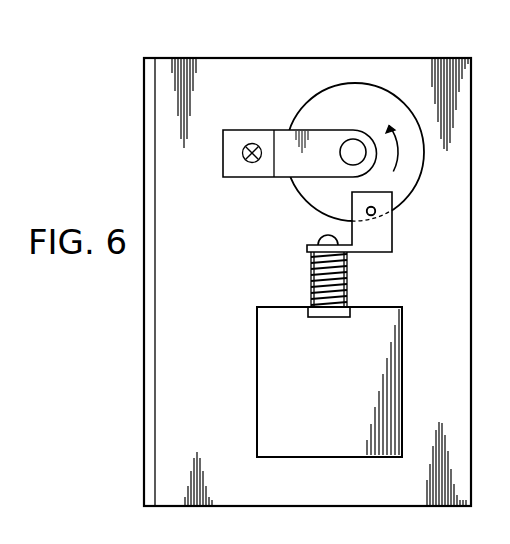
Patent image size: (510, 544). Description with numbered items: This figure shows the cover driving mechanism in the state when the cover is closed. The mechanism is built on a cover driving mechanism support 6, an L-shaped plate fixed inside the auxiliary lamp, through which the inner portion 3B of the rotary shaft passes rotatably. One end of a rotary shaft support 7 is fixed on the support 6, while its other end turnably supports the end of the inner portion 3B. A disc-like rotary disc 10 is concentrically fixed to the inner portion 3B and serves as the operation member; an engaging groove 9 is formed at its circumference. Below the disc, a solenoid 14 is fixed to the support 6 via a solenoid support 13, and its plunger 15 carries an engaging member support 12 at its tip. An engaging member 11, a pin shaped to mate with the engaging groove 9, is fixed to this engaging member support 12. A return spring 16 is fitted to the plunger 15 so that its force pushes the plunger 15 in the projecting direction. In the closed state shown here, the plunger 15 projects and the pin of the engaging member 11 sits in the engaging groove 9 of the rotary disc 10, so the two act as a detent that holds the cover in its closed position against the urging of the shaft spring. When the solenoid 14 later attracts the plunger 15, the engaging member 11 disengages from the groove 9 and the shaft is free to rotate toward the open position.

The cover driving mechanism support 6 is at (253, 82).
The rotary disc 10 is at (362, 95).
The rotary shaft support 7 is at (242, 172).
The inner portion of the rotary shaft 3B is at (342, 153).
The engaging groove 9 is at (376, 213).
The engaging member support 12 is at (385, 238).
The engaging member 11 is at (372, 216).
The return spring 16 is at (312, 265).
The plunger 15 is at (345, 287).
The solenoid 14 is at (275, 383).
The solenoid support 13 is at (405, 373).